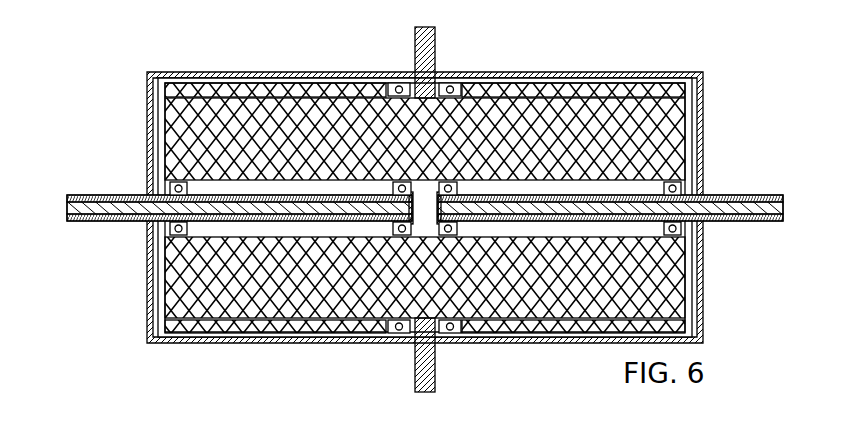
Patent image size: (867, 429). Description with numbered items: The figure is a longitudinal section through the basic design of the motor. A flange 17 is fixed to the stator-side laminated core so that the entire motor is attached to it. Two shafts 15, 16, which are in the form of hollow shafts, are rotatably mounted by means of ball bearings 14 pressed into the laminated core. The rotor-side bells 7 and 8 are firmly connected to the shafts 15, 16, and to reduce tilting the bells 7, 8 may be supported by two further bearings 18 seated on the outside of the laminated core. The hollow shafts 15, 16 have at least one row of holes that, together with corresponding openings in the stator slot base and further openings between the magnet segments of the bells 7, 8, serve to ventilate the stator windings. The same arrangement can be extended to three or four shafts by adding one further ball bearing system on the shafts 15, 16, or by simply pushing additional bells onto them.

The rotor-side bell 7 is at (493, 74).
The rotor-side bell 8 is at (372, 73).
The ball bearing 14 is at (169, 182).
The hollow shaft 15 is at (699, 206).
The hollow shaft 16 is at (146, 199).
The flange 17 is at (419, 341).
The bearing 18 is at (401, 84).